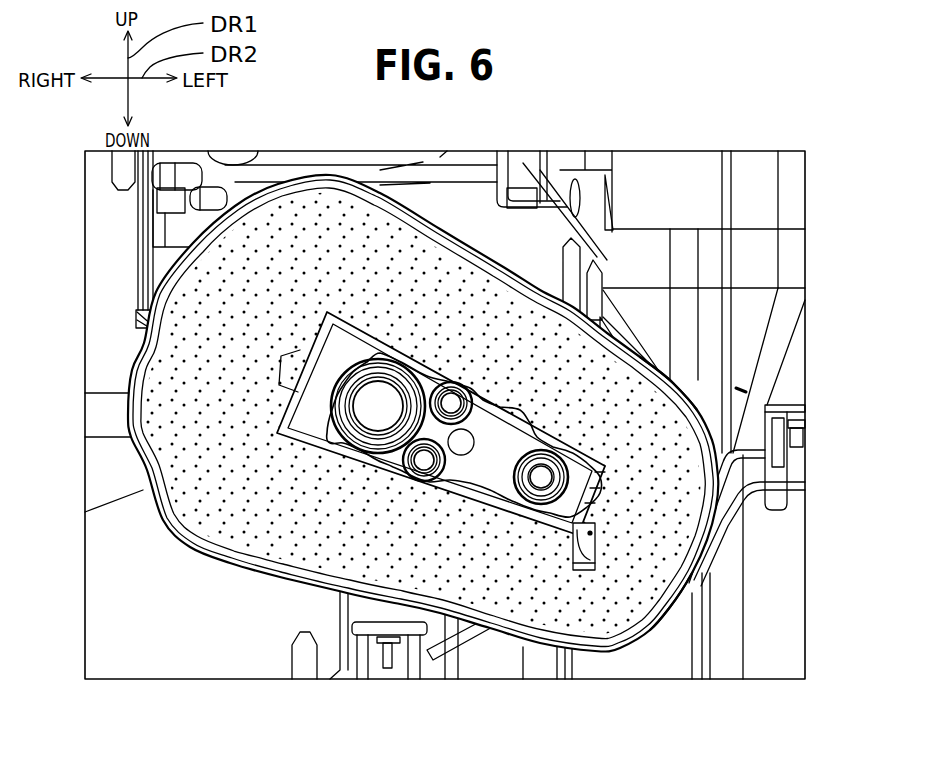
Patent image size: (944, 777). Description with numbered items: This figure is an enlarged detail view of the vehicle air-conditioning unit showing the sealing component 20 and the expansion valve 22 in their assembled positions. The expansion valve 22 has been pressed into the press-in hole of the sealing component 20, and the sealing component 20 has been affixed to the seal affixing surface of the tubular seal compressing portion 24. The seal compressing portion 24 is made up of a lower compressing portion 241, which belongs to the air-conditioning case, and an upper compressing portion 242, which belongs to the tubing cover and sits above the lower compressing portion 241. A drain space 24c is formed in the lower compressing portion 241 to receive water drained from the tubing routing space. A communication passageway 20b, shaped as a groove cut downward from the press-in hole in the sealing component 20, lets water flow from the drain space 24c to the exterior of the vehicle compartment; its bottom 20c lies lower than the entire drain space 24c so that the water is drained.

The sealing component 20 is at (290, 537).
The expansion valve 22 is at (483, 487).
The communication passageway 20b is at (573, 563).
The bottom 20c is at (587, 570).
The seal compressing portion 24 is at (868, 383).
The lower compressing portion 241 is at (678, 614).
The upper compressing portion 242 is at (680, 378).
The drain space 24c is at (590, 533).